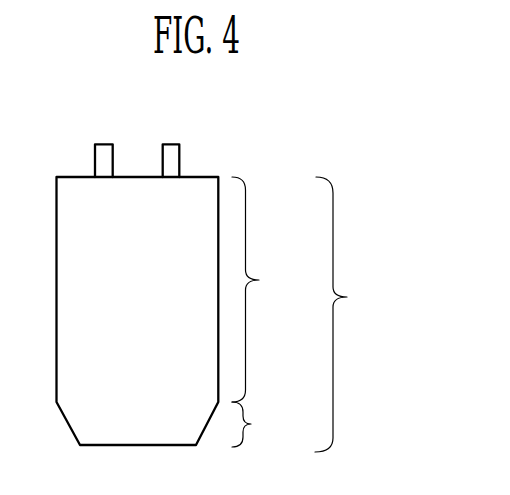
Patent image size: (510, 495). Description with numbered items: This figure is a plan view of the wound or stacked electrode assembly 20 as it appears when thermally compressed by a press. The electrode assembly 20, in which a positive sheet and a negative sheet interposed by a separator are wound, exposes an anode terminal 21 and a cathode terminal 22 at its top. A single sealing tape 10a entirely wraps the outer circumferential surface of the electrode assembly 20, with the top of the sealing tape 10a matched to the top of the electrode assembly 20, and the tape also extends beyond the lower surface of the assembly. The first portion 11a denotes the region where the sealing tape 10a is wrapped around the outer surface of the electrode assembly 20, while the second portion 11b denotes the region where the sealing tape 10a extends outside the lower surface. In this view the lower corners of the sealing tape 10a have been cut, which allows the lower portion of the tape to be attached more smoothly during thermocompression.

The electrode assembly 20 is at (195, 191).
The anode terminal 21 is at (102, 153).
The cathode terminal 22 is at (175, 153).
The sealing tape 10a is at (348, 314).
The first portion 11a is at (262, 289).
The second portion 11b is at (255, 424).